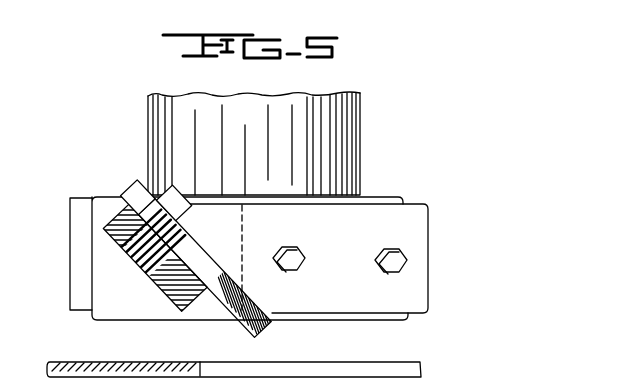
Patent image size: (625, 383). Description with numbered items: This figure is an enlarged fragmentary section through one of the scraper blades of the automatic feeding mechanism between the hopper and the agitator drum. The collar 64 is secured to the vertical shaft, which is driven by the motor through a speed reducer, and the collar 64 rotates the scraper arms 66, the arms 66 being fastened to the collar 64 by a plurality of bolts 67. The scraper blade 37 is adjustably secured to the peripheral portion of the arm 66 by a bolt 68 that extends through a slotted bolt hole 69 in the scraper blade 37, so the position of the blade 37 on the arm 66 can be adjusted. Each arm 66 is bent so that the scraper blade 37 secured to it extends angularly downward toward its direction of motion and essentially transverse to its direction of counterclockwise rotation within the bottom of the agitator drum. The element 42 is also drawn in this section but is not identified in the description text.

The scraper blade 37 is at (252, 306).
The strip 42 is at (292, 367).
The collar 64 is at (348, 137).
The scraper arm 66 is at (160, 276).
The bolts 67 is at (371, 257).
The bolts 68 is at (193, 208).
The slotted bolt holes 69 is at (136, 180).